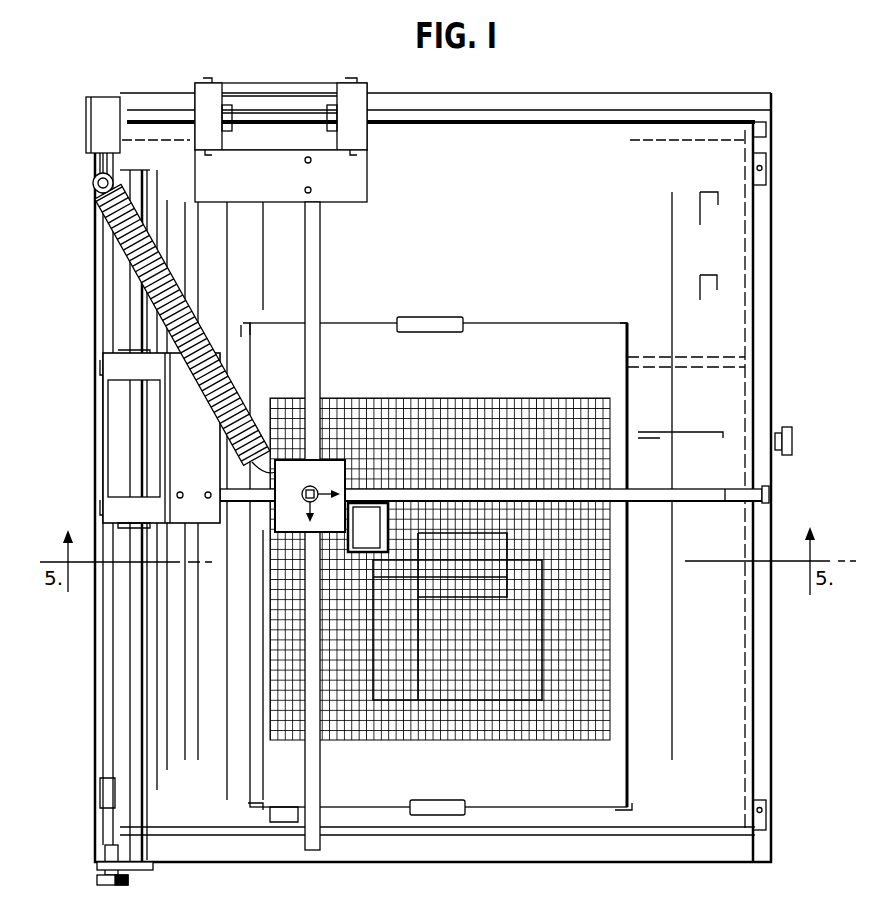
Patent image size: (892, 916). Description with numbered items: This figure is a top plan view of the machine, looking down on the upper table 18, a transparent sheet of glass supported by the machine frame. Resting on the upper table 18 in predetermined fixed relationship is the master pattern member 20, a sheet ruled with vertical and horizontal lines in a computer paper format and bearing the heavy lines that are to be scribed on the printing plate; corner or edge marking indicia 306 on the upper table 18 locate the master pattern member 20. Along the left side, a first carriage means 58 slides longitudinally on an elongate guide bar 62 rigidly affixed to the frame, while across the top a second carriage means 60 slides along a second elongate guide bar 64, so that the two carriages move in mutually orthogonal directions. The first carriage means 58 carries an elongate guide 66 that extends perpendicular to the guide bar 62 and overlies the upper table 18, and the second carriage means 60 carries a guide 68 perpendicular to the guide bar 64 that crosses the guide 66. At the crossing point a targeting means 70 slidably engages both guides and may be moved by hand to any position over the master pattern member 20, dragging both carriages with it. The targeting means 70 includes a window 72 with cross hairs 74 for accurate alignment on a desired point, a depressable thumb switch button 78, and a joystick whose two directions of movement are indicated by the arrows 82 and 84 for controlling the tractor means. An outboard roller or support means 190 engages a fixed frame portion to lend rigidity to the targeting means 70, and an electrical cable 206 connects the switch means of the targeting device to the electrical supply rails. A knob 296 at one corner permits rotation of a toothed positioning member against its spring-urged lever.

The upper table 18 is at (722, 820).
The master pattern member 20 is at (521, 340).
The first carriage means 58 is at (210, 538).
The second carriage means 60 is at (238, 77).
The elongate guide bar 62 is at (137, 657).
The elongate guide bar 64 is at (596, 115).
The elongate guide 66 is at (640, 492).
The guide 68 is at (320, 792).
The targeting means 70 is at (329, 450).
The window 72 is at (290, 546).
The cross hairs 74 is at (372, 528).
The thumb switch button 78 is at (303, 487).
The arrow 82 is at (331, 479).
The arrow 84 is at (297, 514).
The outboard roller or support means 190 is at (766, 492).
The electrical cable 206 is at (147, 277).
The knob 296 is at (128, 880).
The corner or edge marking indicia 306 is at (248, 323).